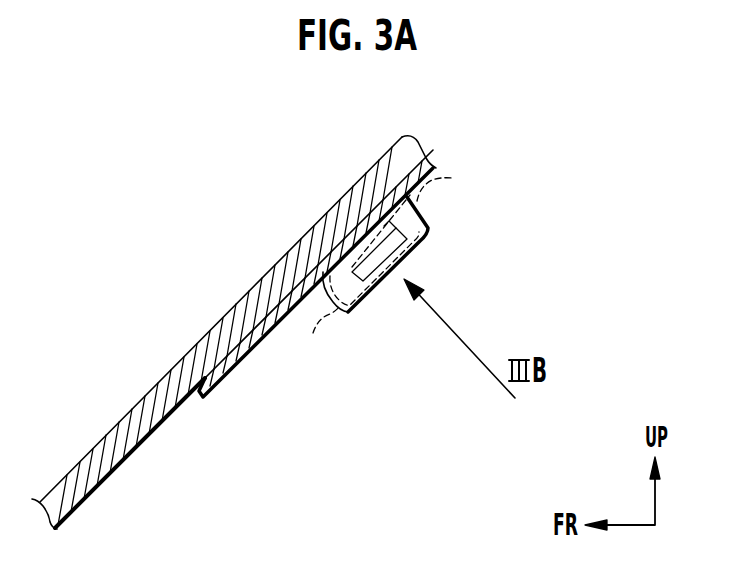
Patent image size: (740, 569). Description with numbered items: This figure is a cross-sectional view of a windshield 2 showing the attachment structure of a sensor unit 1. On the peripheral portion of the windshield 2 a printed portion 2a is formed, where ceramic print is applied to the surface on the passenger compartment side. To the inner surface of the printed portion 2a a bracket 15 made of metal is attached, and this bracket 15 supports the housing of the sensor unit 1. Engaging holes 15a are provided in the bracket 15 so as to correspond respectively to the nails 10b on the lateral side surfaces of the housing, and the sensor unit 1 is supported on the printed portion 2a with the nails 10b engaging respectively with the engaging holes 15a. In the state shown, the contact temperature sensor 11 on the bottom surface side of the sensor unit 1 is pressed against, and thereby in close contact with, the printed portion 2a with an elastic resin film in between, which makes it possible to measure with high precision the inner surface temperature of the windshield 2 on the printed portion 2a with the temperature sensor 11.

The sensor unit 1 is at (323, 340).
The windshield 2 is at (206, 338).
The printed portion 2a is at (233, 364).
The nail 10b is at (372, 263).
The contact temperature sensor 11 is at (415, 212).
The bracket 15 is at (433, 242).
The engaging hole 15a is at (408, 231).